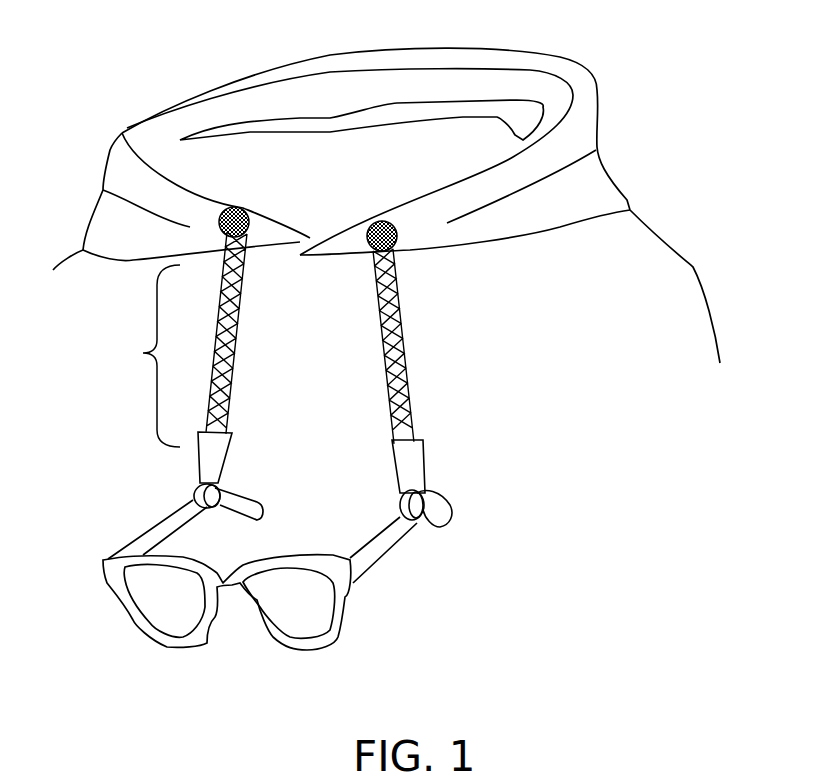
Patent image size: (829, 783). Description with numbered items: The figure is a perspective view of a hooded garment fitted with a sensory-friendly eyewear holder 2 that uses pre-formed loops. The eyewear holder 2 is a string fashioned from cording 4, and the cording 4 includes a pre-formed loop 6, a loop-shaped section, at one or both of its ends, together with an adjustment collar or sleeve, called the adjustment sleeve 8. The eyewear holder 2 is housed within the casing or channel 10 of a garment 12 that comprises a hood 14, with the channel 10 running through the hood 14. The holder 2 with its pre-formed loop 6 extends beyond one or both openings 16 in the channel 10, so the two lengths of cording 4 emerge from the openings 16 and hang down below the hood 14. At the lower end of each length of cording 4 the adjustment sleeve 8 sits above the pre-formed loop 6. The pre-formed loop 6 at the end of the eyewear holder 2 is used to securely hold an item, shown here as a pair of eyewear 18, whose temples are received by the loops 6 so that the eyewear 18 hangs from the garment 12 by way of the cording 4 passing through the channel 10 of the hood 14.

The sensory-friendly eyewear holder 2 is at (152, 356).
The cording 4 is at (410, 318).
The pre-formed loop 6 is at (417, 520).
The adjustment sleeve 8 is at (420, 462).
The channel 10 is at (587, 78).
The garment 12 is at (675, 280).
The hood 14 is at (383, 123).
The openings 16 is at (247, 213).
The eyewear 18 is at (243, 640).